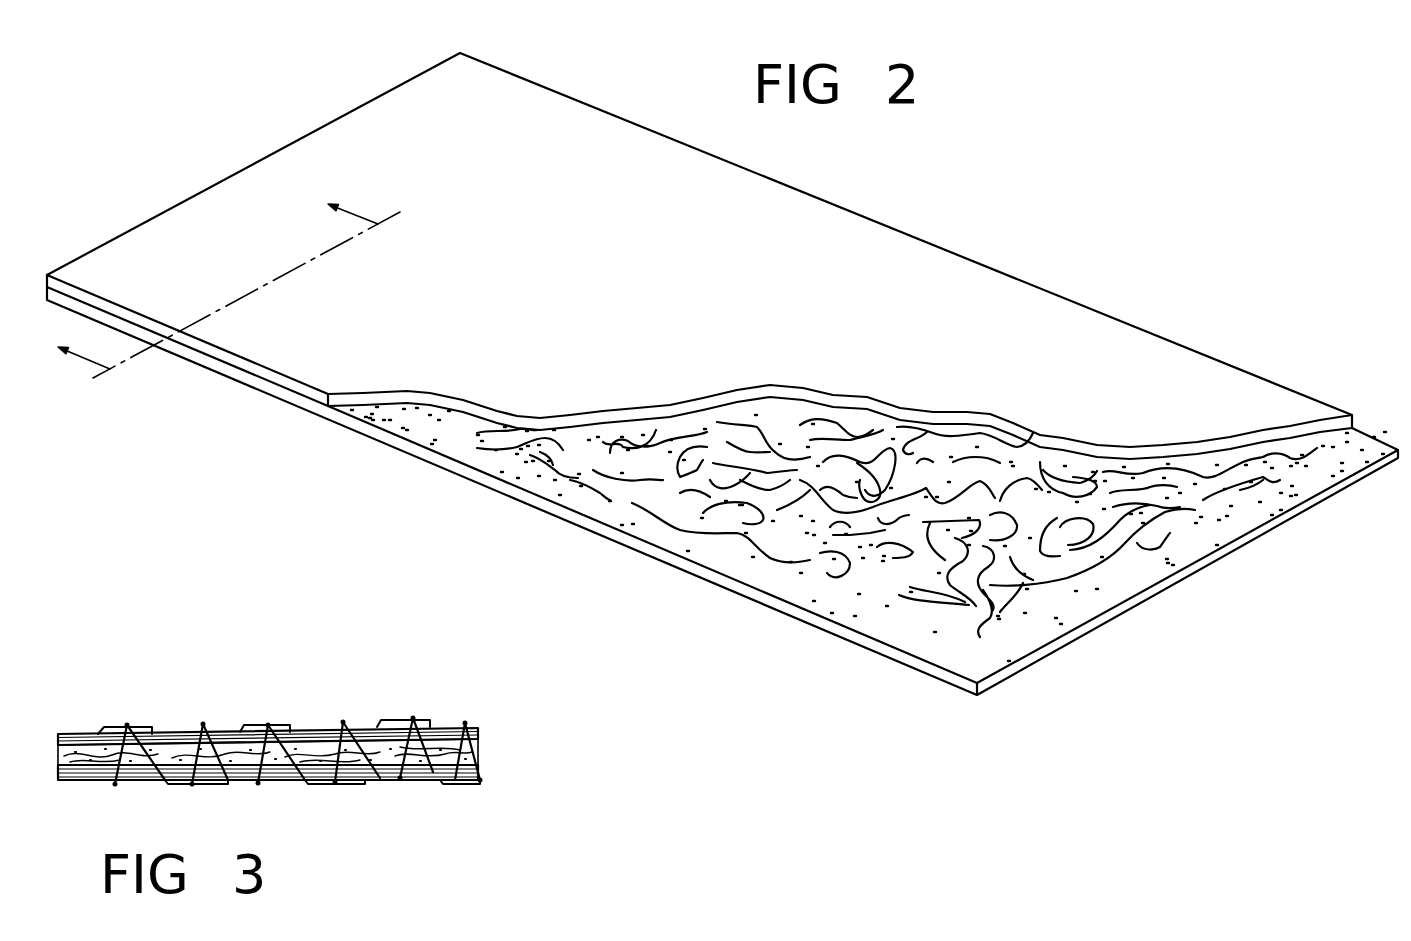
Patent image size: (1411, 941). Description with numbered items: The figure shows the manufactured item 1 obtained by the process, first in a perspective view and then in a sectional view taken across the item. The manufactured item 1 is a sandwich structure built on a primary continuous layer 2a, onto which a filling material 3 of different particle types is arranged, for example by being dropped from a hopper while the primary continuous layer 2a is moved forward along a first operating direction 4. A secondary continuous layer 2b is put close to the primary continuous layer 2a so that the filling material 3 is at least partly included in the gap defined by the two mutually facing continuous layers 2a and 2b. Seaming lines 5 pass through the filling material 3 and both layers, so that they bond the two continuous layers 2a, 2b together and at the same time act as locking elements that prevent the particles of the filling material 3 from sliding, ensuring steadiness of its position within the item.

In FIG. 2, the manufactured item 1 is at (995, 224).
In FIG. 2, the primary continuous layer 2a is at (897, 637).
In FIG. 3, the primary continuous layer 2a is at (428, 773).
In FIG. 2, the secondary continuous layer 2b is at (1085, 347).
In FIG. 3, the secondary continuous layer 2b is at (367, 723).
In FIG. 2, the filling material 3 is at (1023, 582).
In FIG. 3, the filling material 3 is at (480, 745).
In FIG. 3, the first operating direction 4 is at (352, 781).
In FIG. 3, the seaming lines 5 is at (110, 725).